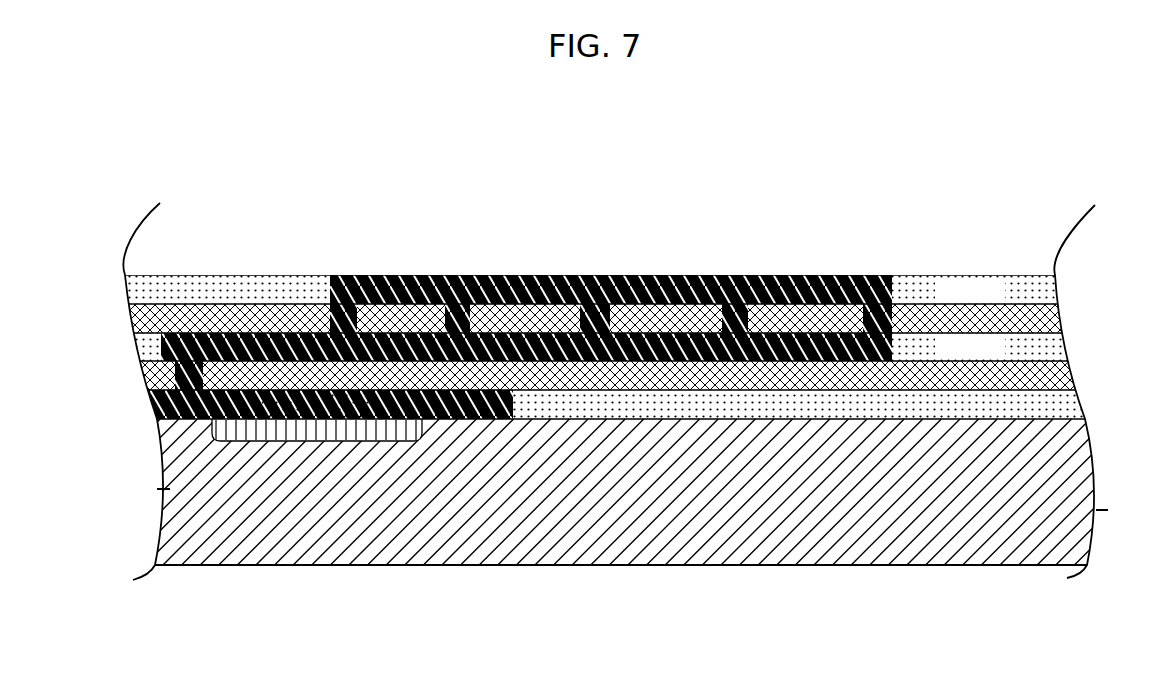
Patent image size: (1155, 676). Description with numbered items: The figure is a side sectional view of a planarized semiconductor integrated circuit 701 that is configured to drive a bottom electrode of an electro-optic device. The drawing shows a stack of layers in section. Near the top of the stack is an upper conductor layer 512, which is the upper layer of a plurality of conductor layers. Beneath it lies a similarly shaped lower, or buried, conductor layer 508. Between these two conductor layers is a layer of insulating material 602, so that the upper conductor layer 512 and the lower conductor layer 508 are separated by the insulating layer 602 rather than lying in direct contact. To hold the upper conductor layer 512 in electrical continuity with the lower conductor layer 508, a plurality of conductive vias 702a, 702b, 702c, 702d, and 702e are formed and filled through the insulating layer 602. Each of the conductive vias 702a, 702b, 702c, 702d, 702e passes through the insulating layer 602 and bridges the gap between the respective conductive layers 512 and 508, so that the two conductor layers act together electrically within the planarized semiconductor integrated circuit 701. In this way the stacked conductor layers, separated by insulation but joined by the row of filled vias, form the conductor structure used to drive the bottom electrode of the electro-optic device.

The planarized semiconductor integrated circuit 701 is at (912, 123).
The upper conductor layer 512 is at (895, 293).
The lower conductor layer 508 is at (895, 351).
The insulating layer 602 is at (620, 274).
The conductive via 702a is at (328, 318).
The conductive via 702b is at (442, 318).
The via 702c is at (578, 318).
The conductive via 702d is at (721, 318).
The conductive via 702e is at (861, 318).